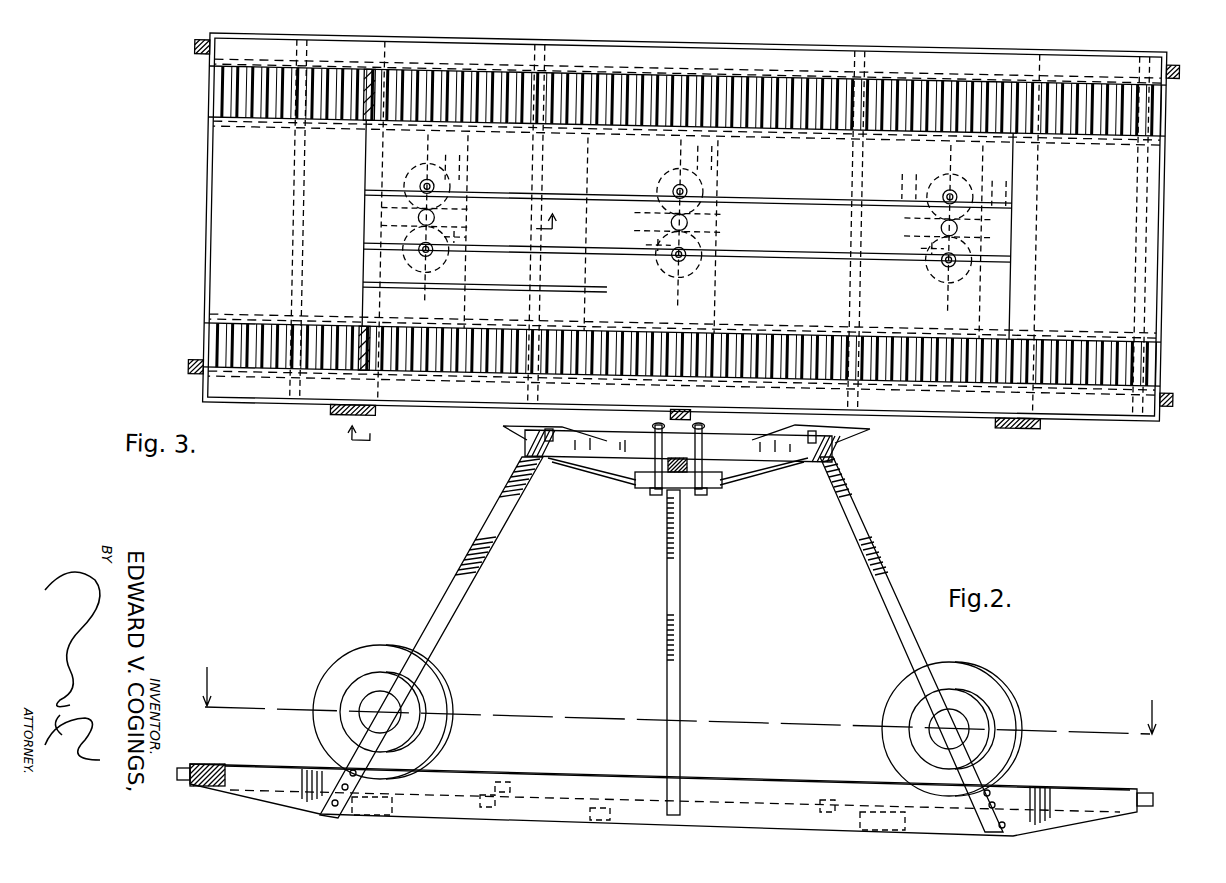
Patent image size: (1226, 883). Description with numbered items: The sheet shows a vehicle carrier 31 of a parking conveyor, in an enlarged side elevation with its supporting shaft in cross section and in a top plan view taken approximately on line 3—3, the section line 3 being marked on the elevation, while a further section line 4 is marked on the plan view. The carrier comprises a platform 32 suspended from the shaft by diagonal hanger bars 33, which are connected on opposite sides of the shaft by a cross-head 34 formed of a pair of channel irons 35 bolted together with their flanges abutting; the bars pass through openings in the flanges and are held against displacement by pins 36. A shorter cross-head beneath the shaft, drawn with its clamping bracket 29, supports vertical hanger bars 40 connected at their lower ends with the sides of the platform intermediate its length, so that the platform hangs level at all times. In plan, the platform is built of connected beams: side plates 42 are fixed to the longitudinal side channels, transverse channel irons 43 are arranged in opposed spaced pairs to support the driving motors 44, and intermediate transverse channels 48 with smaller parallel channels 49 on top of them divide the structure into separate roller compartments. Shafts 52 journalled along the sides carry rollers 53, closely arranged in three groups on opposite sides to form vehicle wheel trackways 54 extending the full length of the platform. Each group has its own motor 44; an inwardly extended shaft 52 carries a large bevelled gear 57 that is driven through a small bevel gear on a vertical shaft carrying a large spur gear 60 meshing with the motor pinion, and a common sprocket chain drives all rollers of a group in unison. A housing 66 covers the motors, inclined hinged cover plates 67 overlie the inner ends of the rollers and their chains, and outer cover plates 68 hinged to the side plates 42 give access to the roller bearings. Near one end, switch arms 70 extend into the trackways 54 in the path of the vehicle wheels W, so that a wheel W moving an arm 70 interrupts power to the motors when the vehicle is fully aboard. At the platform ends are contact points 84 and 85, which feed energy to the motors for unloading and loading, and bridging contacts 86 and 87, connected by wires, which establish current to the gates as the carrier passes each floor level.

In FIG. 2, the mounting bracket 29 is at (644, 491).
In FIG. 3, the vehicle carrier 31 is at (198, 170).
In FIG. 2, the vehicle carrier 31 is at (662, 625).
In FIG. 3, the platform 32 is at (235, 247).
In FIG. 2, the platform 32 is at (292, 768).
In FIG. 3, the diagonal hanger bars 33 is at (338, 409).
In FIG. 2, the diagonal hanger bars 33 is at (452, 598).
In FIG. 2, the cross-head 34 is at (511, 454).
In FIG. 2, the channel irons 35 is at (780, 456).
In FIG. 2, the pins 36 is at (503, 426).
In FIG. 3, the vertical hanger bars 40 is at (684, 400).
In FIG. 2, the vertical hanger bars 40 is at (681, 651).
In FIG. 3, the side plates 42 is at (1060, 412).
In FIG. 2, the side plates 42 is at (1040, 790).
In FIG. 3, the transverse channel irons 43 is at (466, 167).
In FIG. 2, the transverse channel irons 43 is at (380, 812).
In FIG. 3, the driving motors 44 is at (470, 234).
In FIG. 2, the intermediate transverse channels 48 is at (493, 807).
In FIG. 2, the parallel channels 49 is at (512, 783).
In FIG. 3, the shafts 52 is at (448, 144).
In FIG. 3, the rollers 53 is at (347, 124).
In FIG. 3, the vehicle wheel trackways 54 is at (294, 118).
In FIG. 3, the bevelled gears 57 is at (648, 250).
In FIG. 3, the spur gears 60 is at (420, 165).
In FIG. 3, the housing 66 is at (688, 239).
In FIG. 3, the inclined hinged cover plates 67 is at (688, 230).
In FIG. 2, the inclined hinged cover plates 67 is at (592, 768).
In FIG. 3, the outer cover plates 68 is at (720, 226).
In FIG. 3, the switch arms 70 is at (366, 119).
In FIG. 3, the contact point 84 is at (195, 45).
In FIG. 3, the contact point 85 is at (1180, 57).
In FIG. 3, the bridging contact 86 is at (195, 369).
In FIG. 2, the bridging contact 86 is at (190, 766).
In FIG. 3, the bridging contact 87 is at (1179, 380).
In FIG. 2, the bridging contact 87 is at (1145, 793).
In FIG. 2, the vehicle wheel W is at (447, 698).
In FIG. 2, the section line 3— 3 is at (678, 692).
In FIG. 3, the section line 4 is at (458, 332).